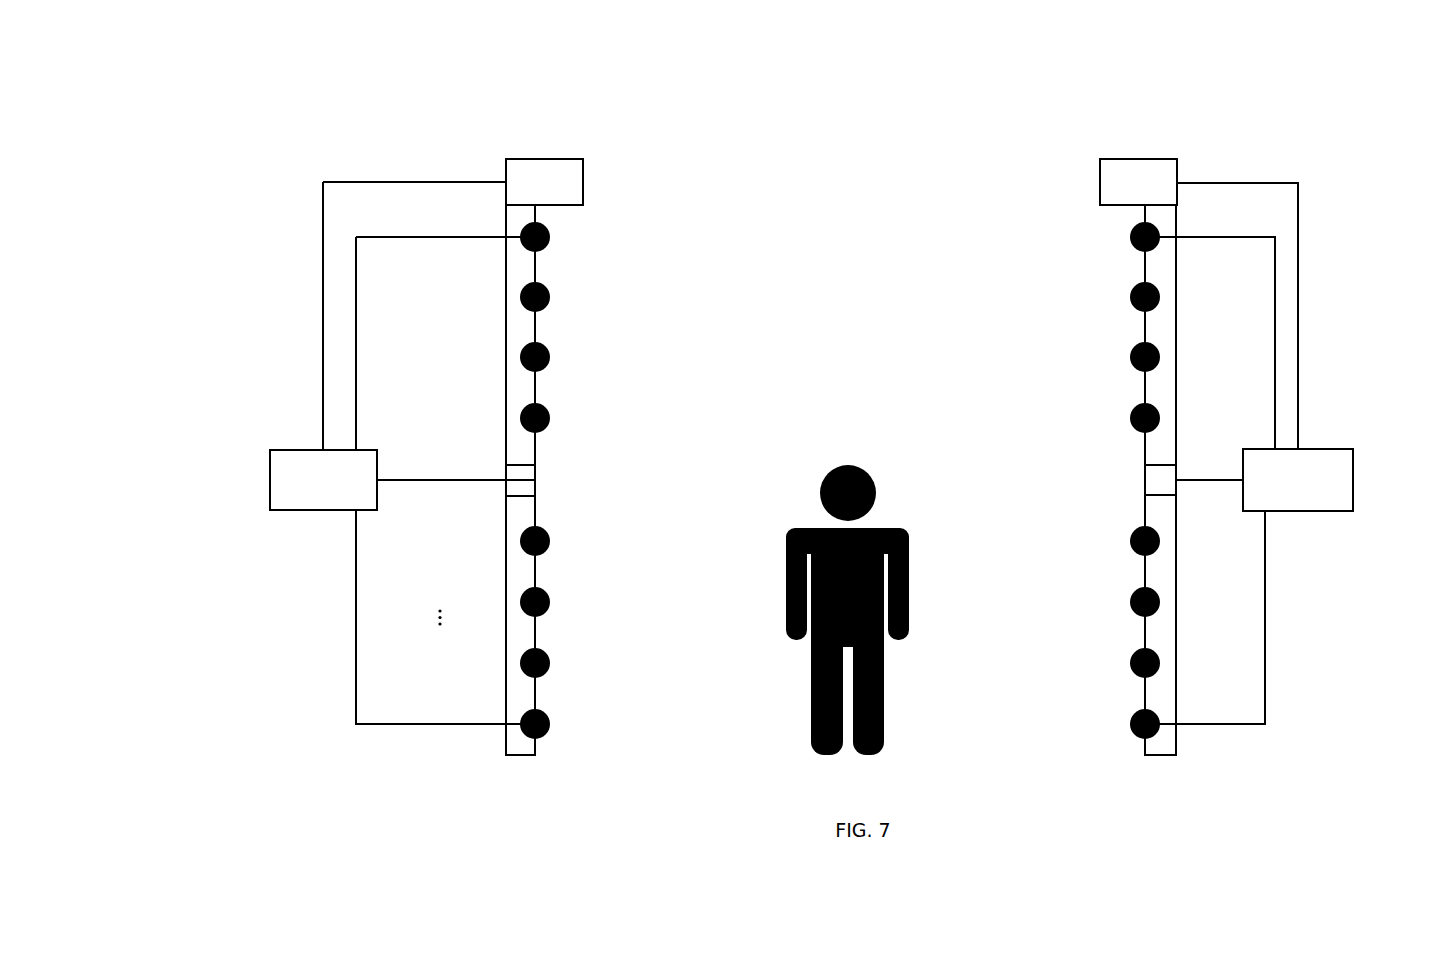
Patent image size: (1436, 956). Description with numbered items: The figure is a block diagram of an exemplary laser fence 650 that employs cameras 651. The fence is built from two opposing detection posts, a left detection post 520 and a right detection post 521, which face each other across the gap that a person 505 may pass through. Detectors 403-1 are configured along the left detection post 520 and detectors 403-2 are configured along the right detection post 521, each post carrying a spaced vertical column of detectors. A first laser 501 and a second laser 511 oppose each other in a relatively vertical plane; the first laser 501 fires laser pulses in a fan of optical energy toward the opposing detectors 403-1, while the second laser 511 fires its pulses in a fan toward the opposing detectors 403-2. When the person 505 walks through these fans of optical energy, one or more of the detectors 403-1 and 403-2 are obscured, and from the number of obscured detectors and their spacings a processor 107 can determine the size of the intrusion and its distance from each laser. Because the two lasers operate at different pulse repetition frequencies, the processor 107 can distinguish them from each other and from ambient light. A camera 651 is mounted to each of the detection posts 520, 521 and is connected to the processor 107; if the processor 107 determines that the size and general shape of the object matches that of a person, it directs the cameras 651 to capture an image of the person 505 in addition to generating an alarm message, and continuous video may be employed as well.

The laser fence 650 is at (437, 122).
The camera 651 is at (583, 182).
The detectors 403-1 is at (550, 357).
The detectors 403-2 is at (1137, 343).
The detection post 520 is at (506, 388).
The detection post 521 is at (1176, 388).
The second laser 511 is at (537, 480).
The first laser 501 is at (1143, 480).
The person 505 is at (863, 467).
The processor 107 is at (811, 480).